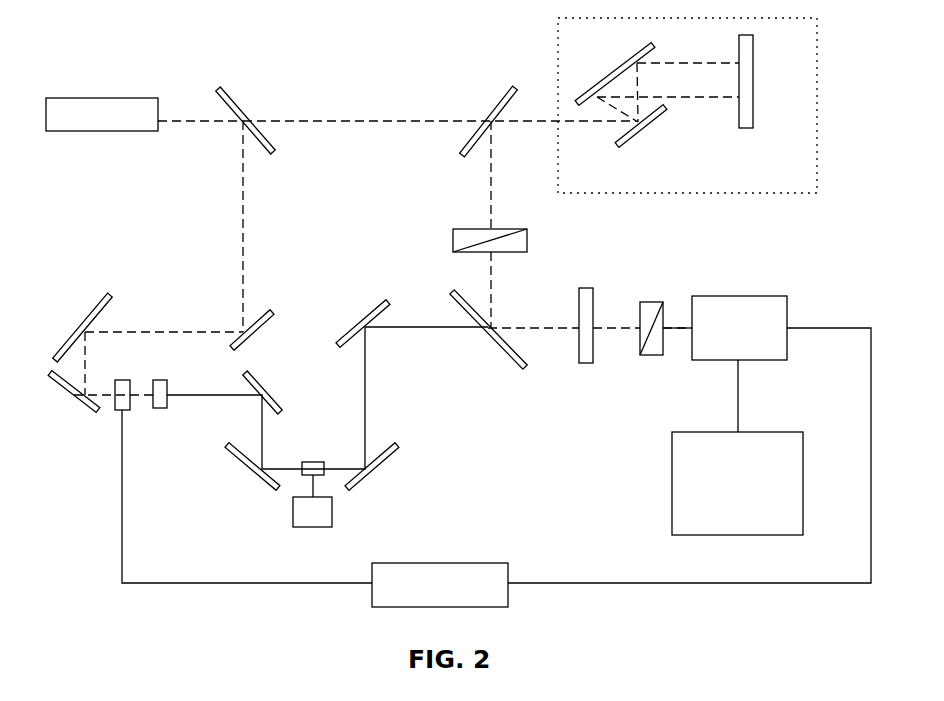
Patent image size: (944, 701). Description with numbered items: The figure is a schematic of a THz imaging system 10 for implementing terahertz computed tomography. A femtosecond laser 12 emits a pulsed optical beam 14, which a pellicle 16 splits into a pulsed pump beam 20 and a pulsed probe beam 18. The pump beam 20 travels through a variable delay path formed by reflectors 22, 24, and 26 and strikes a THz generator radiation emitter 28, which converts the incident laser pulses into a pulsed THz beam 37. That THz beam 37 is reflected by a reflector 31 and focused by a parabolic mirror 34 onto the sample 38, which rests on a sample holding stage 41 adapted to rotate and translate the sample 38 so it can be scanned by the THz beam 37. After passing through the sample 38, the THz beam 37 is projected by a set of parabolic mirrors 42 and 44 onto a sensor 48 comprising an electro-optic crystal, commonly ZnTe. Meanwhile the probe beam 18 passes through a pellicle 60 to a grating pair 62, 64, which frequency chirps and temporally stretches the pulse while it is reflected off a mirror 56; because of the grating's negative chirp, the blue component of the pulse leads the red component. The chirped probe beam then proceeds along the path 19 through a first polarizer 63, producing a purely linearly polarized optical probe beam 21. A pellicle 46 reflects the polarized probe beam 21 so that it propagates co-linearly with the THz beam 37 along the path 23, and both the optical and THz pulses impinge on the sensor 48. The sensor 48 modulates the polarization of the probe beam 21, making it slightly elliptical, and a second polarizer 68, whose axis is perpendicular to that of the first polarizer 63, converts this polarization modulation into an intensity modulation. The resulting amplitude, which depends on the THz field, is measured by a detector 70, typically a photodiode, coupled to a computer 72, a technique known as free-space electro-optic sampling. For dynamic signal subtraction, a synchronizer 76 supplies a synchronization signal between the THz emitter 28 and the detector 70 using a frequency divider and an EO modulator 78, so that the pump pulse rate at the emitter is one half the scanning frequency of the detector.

The THz imaging system 10 is at (852, 237).
The femtosecond laser 12 is at (103, 98).
The pulsed optical beam 14 is at (190, 121).
The pellicle 16 is at (244, 100).
The pulsed probe beam 18 is at (369, 121).
The path 19 is at (491, 179).
The pulsed pump beam 20 is at (243, 228).
The polarized optical probe beam 21 is at (491, 282).
The reflector 22 is at (243, 328).
The path 23 is at (548, 330).
The reflector 24 is at (90, 305).
The reflector 26 is at (72, 398).
The THz generator radiation emitter 28 is at (160, 380).
The reflector 31 is at (268, 392).
The parabolic mirror 34 is at (245, 460).
The pulsed THz beam 37 is at (204, 395).
The sample 38 is at (315, 462).
The sample holding stage 41 is at (325, 513).
The parabolic mirror 42 is at (380, 470).
The parabolic mirror 44 is at (363, 320).
The pellicle 46 is at (500, 357).
The sensor 48 is at (586, 364).
The mirror 56 is at (753, 80).
The pellicle 60 is at (492, 100).
The grating 62 is at (655, 125).
The first polarizer 63 is at (527, 240).
The grating 64 is at (612, 72).
The second polarizer 68 is at (652, 302).
The detector 70 is at (738, 296).
The computer 72 is at (737, 447).
The synchronizer 76 is at (440, 585).
The EO modulator 78 is at (120, 410).